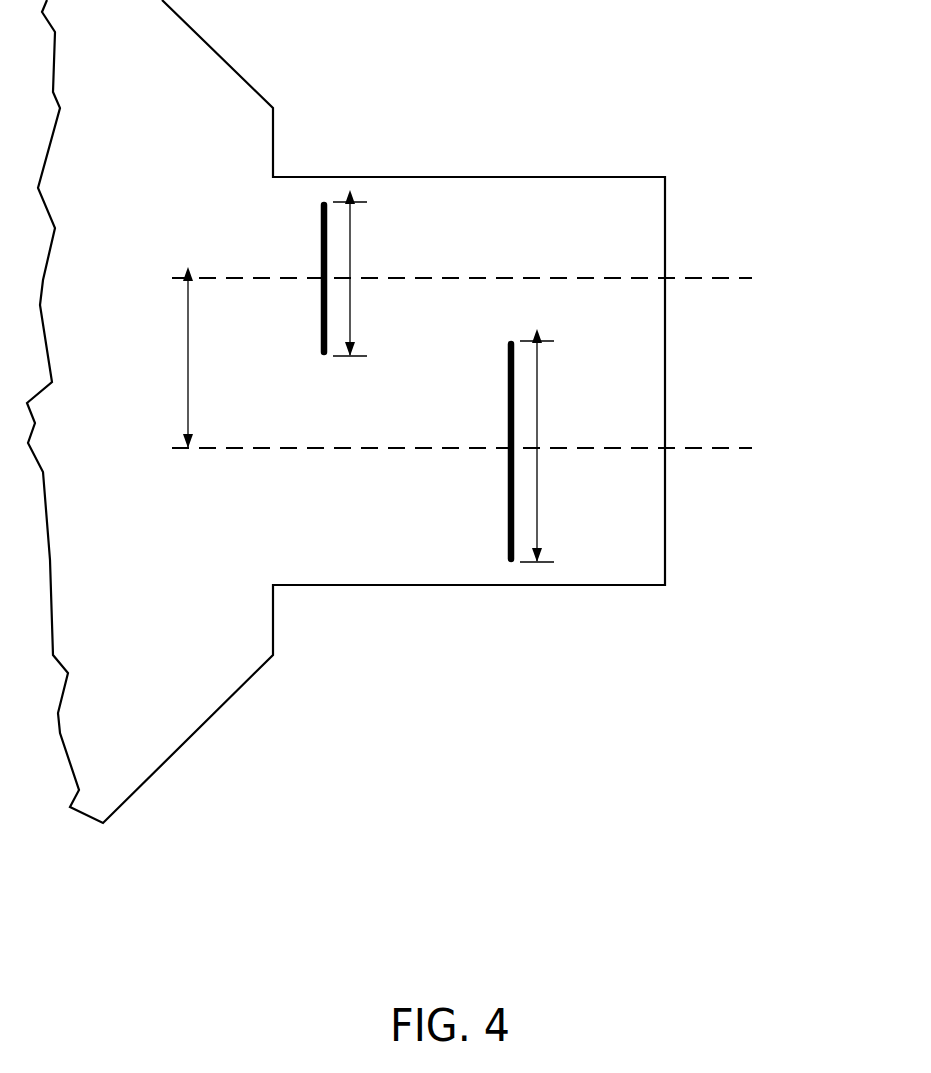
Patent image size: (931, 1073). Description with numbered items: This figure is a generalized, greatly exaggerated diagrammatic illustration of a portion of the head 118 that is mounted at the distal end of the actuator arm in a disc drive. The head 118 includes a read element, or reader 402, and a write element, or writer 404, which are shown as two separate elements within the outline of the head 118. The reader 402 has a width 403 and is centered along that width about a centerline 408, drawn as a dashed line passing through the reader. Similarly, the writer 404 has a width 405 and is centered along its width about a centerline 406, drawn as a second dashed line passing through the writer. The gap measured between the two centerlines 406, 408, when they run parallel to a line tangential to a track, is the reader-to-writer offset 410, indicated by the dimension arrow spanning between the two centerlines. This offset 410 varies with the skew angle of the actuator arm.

The head 118 is at (550, 100).
The read element 402 is at (322, 318).
The width of the reader 403 is at (350, 236).
The write element 404 is at (508, 425).
The width of the writer 405 is at (538, 383).
The centerline of the writer 406 is at (698, 448).
The centerline of the reader 408 is at (698, 278).
The reader-to-writer offset 410 is at (188, 367).